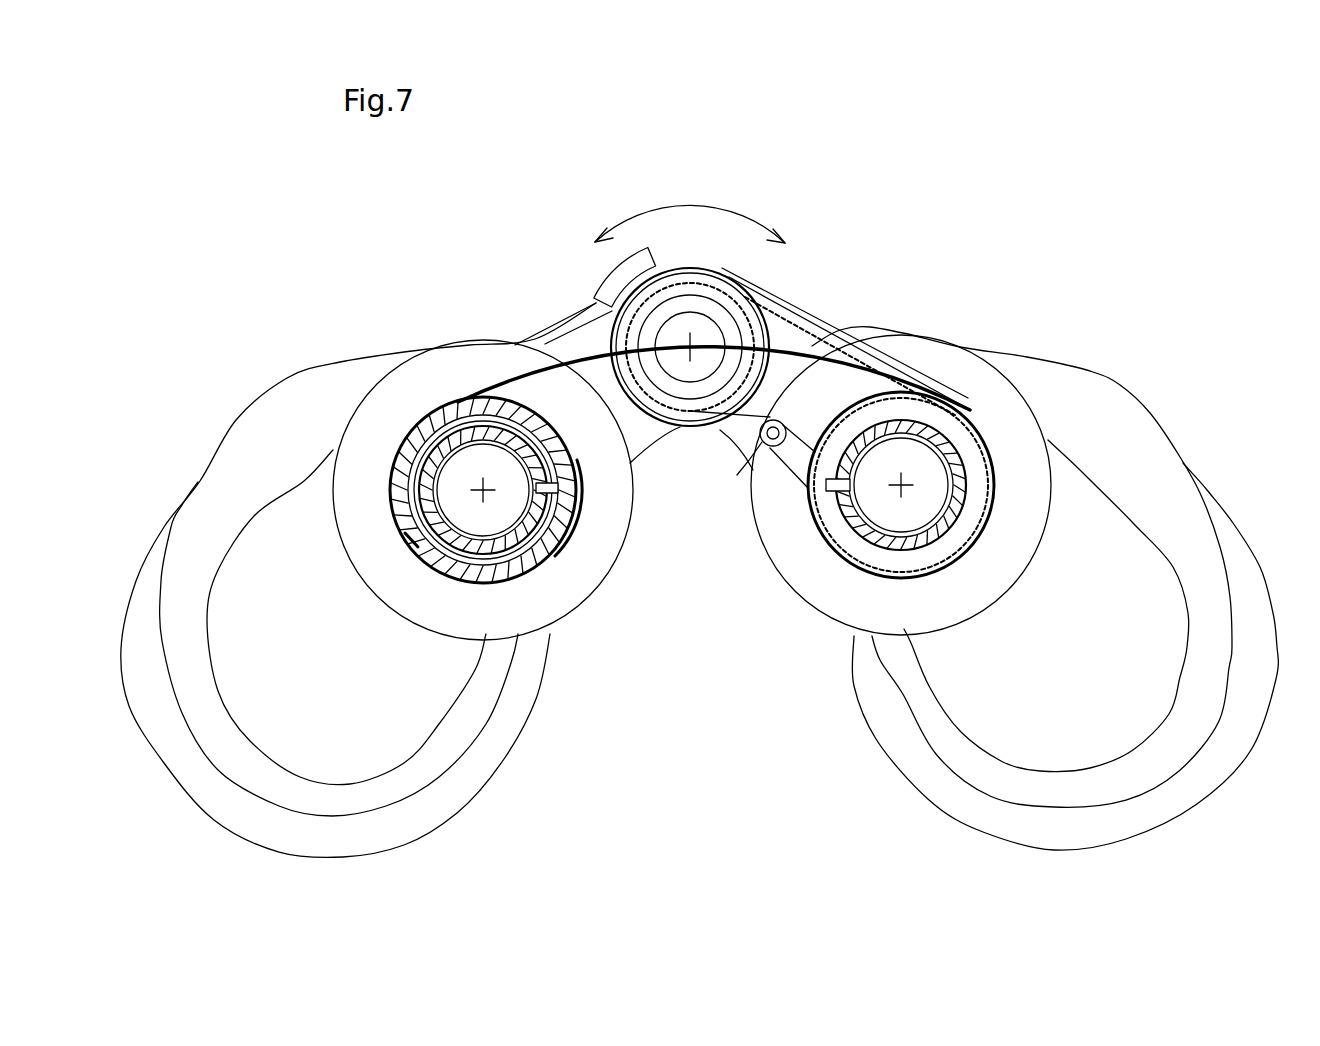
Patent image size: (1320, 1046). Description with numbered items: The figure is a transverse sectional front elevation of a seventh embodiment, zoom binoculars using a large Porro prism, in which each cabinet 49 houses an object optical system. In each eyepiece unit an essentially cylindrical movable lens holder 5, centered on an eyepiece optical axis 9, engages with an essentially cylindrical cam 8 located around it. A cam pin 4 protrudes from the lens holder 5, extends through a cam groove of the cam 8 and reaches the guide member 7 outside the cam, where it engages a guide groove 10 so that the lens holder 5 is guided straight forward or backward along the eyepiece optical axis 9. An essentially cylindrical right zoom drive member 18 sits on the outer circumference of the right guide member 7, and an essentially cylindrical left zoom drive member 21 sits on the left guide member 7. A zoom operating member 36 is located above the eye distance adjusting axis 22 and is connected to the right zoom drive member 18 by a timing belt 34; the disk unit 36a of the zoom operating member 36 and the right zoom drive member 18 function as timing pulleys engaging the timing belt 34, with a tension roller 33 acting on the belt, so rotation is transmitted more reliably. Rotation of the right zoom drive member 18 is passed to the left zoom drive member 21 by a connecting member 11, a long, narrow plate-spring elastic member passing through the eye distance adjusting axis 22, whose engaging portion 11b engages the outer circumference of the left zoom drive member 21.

The cam pin 4 is at (545, 503).
The movable lens holder 5 is at (530, 540).
The guide member 7 is at (440, 557).
The cam 8 is at (473, 557).
The eyepiece optical axis 9 is at (897, 492).
The guide groove 10 is at (583, 500).
The connecting member 11 is at (571, 370).
The engaging portion 11b is at (411, 550).
The right zoom drive member 18 is at (903, 380).
The left zoom drive member 21 is at (387, 505).
The eye distance adjusting axis 22 is at (605, 296).
The tension roller 33 is at (763, 443).
The timing belt 34 is at (823, 338).
The zoom operating member 36 is at (649, 256).
The disk unit 36a is at (707, 284).
The cabinet 49 is at (949, 789).